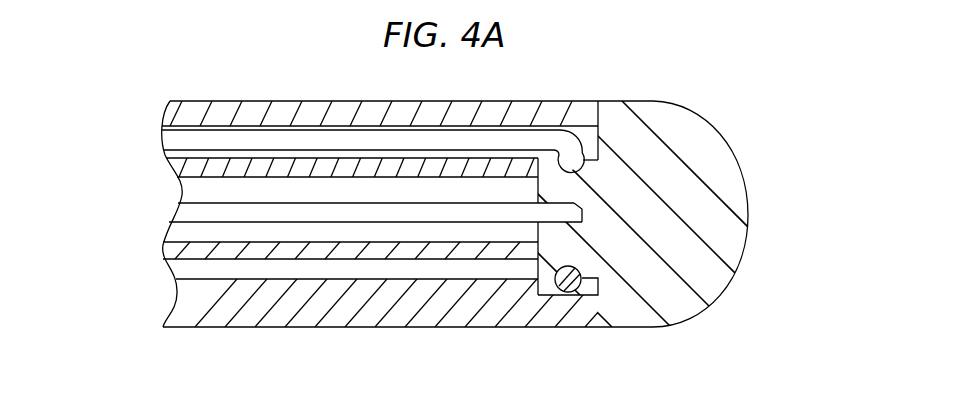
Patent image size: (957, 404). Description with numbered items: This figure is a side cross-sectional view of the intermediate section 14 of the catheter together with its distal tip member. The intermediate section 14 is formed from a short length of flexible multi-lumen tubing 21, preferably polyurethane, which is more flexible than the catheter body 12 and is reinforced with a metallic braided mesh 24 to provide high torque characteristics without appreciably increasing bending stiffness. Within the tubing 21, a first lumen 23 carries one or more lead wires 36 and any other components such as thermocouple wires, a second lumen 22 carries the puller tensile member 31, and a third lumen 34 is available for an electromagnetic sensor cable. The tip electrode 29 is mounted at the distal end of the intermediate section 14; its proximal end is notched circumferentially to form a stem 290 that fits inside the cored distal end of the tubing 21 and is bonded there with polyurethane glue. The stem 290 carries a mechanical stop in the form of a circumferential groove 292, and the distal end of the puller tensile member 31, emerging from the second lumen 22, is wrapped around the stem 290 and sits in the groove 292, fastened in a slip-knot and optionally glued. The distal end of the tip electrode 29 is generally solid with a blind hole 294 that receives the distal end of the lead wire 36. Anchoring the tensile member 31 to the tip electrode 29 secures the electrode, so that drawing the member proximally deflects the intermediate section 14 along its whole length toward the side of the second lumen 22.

The catheter body 12 is at (256, 346).
The intermediate section 14 is at (503, 97).
The flexible multi-lumen tubing 21 is at (553, 112).
The second lumen 22 is at (163, 127).
The first lumen 23 is at (170, 190).
The metallic braided mesh 24 is at (490, 318).
The tip electrode 29 is at (667, 140).
The puller tensile member 31 is at (160, 143).
The third lumen 34 is at (170, 267).
The lead wire 36 is at (173, 213).
The stem 290 is at (553, 230).
The circumferential groove 292 is at (583, 167).
The blind hole 294 is at (583, 218).